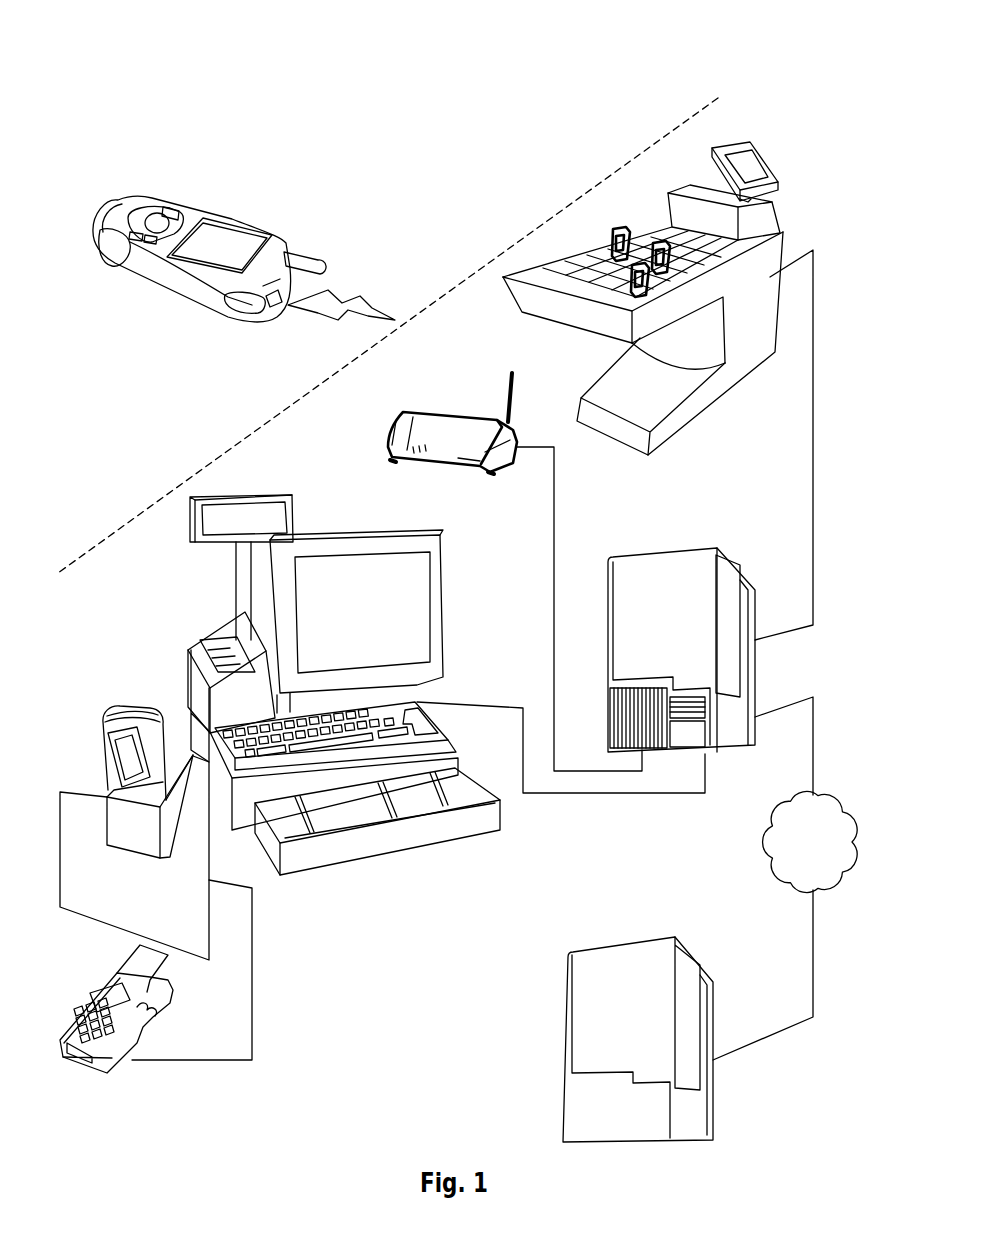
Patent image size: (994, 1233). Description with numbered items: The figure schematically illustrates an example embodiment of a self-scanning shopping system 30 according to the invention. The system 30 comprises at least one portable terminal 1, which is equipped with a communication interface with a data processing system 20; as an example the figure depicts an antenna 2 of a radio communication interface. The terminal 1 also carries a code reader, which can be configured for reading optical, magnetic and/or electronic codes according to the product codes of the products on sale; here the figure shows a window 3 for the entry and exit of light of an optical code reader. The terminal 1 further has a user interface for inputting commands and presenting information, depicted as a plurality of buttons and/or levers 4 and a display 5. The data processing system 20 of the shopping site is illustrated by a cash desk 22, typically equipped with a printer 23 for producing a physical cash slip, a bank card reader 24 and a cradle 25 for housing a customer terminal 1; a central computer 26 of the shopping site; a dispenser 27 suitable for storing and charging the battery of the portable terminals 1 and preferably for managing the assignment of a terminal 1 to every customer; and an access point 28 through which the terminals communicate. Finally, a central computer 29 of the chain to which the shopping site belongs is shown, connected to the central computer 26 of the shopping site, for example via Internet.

The terminal 1 is at (244, 230).
The antenna 2 is at (307, 262).
The window 3 is at (270, 301).
The buttons and/or levers 4 is at (167, 212).
The display 5 is at (217, 240).
The data processing system 20 is at (670, 249).
The cash desk 22 is at (441, 655).
The printer 23 is at (189, 649).
The bank card reader 24 is at (120, 1063).
The cradle 25 is at (113, 805).
The central computer of the shopping site 26 is at (724, 579).
The dispenser 27 is at (784, 199).
The access point 28 is at (440, 424).
The central computer of the chain 29 is at (678, 961).
The self-scanning shopping system 30 is at (663, 79).